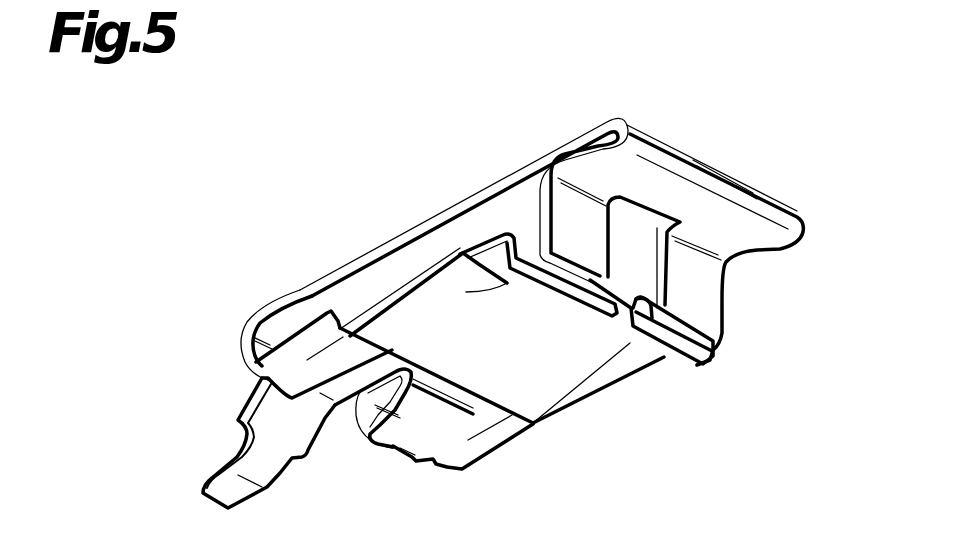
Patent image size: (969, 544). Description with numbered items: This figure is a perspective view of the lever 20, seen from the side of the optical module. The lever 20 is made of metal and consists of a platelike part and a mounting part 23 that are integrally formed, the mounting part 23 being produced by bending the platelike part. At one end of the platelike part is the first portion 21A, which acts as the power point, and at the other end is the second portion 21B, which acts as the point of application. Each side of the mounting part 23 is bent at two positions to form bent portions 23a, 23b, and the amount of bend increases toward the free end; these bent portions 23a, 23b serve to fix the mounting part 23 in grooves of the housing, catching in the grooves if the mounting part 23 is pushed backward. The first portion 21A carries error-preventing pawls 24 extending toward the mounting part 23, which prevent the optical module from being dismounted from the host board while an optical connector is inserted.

The lever 20 is at (436, 157).
The first portion 21A is at (718, 156).
The second portion 21B is at (200, 472).
The mounting part 23 is at (558, 372).
The bent portion 23a is at (305, 322).
The bent portion 23b is at (435, 262).
The error-preventing pawl 24 is at (707, 296).